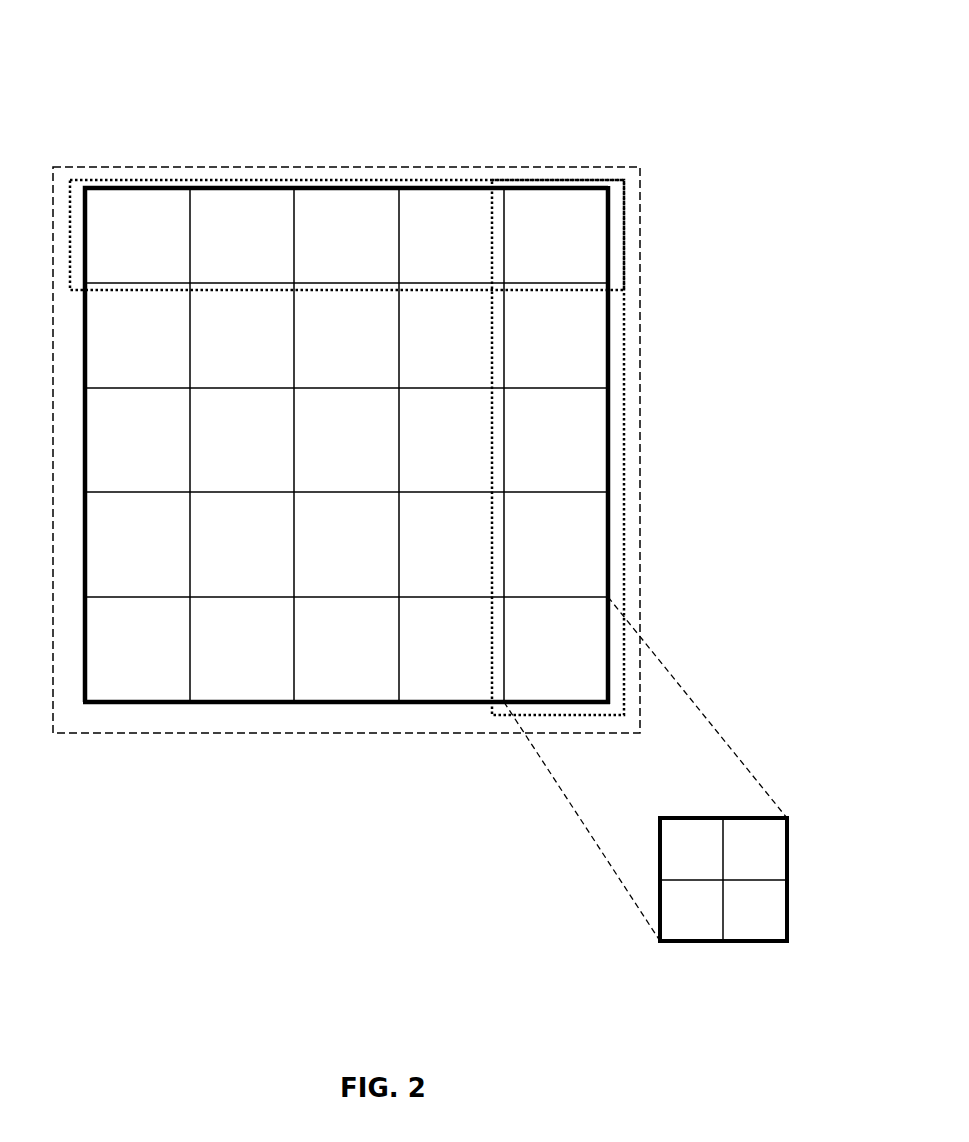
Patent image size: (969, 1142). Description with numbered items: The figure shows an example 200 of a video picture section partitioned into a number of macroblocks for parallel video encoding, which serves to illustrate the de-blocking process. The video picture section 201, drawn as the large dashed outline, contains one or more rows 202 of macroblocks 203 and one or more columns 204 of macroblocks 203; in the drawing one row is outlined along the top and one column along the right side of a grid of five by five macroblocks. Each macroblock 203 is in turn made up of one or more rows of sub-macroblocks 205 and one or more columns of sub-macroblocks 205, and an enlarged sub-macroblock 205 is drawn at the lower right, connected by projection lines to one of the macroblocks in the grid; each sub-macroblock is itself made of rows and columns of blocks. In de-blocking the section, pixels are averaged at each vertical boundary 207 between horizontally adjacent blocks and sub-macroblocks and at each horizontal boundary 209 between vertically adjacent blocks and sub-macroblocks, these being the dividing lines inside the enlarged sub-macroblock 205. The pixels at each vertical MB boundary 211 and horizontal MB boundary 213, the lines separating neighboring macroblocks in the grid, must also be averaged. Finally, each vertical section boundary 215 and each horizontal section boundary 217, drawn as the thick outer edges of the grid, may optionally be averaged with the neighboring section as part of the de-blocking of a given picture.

The example of a video picture section partitioned into macroblocks 200 is at (62, 30).
The video picture section 201 is at (348, 733).
The row of macroblocks 202 is at (562, 178).
The macroblock 203 is at (598, 233).
The column of macroblocks 204 is at (623, 337).
The sub-macroblock 205 is at (693, 920).
The vertical boundary 207 is at (725, 845).
The horizontal boundary 209 is at (757, 878).
The vertical MB boundary 211 is at (190, 240).
The horizontal MB boundary 213 is at (137, 285).
The vertical section boundary 215 is at (612, 563).
The horizontal section boundary 217 is at (400, 702).